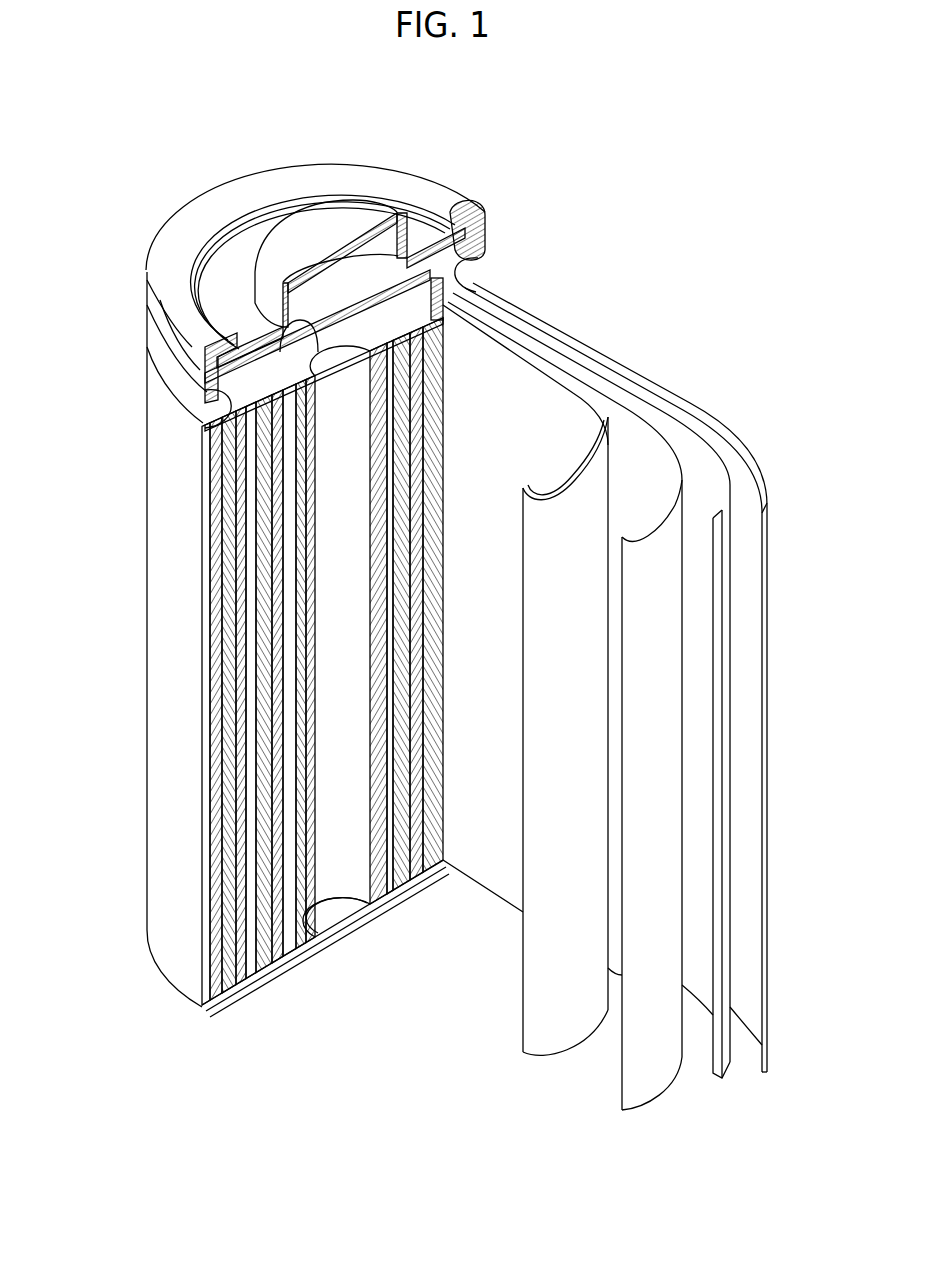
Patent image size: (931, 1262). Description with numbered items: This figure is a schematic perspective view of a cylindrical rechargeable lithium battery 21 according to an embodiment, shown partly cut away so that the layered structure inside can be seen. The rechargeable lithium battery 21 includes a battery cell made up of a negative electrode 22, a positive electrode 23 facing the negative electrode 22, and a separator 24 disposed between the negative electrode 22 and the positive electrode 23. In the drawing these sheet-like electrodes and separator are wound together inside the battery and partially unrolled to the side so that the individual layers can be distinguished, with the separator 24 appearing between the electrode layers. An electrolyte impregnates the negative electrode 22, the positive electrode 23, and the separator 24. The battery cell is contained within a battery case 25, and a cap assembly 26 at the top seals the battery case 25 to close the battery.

The rechargeable lithium battery 21 is at (624, 242).
The negative electrode 22 is at (733, 447).
The positive electrode 23 is at (622, 417).
The separator 24 is at (500, 355).
The battery case 25 is at (150, 631).
The cap assembly 26 is at (295, 218).